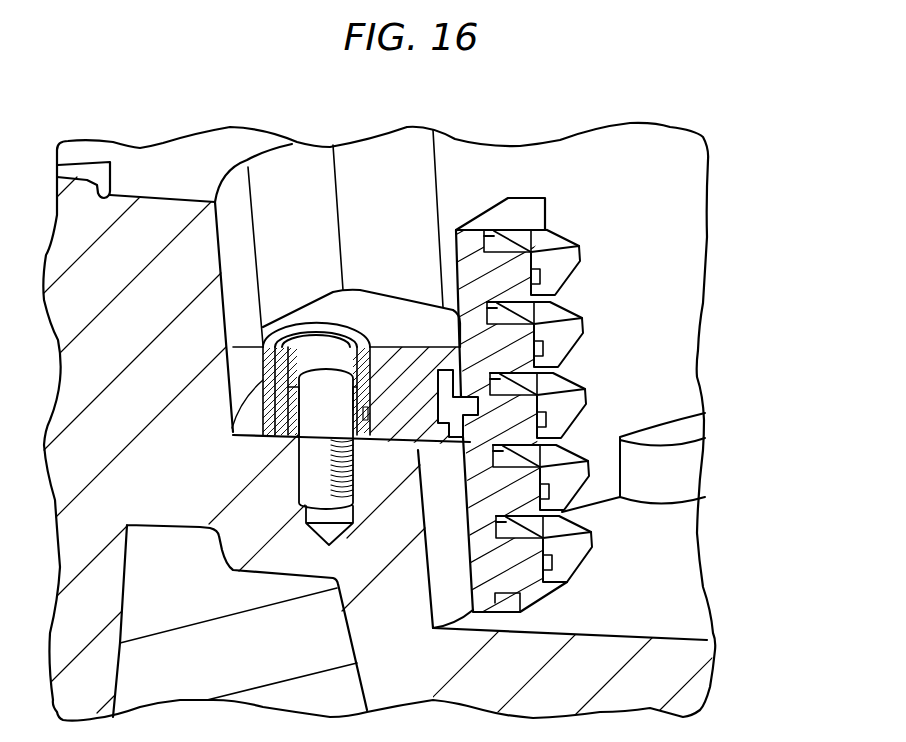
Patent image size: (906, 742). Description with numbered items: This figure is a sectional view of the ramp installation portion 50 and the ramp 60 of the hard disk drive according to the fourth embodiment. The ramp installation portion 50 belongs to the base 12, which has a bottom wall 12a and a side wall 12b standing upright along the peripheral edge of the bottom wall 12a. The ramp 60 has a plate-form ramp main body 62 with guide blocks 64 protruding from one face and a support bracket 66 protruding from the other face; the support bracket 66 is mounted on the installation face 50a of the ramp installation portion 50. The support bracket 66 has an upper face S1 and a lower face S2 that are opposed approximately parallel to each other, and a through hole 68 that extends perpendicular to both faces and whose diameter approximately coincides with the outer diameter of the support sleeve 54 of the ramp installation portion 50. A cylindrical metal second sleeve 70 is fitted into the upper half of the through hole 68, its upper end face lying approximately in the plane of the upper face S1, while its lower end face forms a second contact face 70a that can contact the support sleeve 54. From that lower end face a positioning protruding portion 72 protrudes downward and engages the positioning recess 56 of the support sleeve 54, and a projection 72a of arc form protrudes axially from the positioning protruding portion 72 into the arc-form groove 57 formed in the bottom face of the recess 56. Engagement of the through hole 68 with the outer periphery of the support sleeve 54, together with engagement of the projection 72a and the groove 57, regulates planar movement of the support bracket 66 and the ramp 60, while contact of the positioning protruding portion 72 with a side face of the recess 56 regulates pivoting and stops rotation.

The base 12 is at (163, 158).
The bottom wall 12a is at (688, 607).
The side wall 12b is at (308, 167).
The ramp installation portion 50 is at (440, 575).
The installation face 50a is at (237, 427).
The support sleeve 54 is at (298, 440).
The positioning recess 56 is at (332, 360).
The groove 57 is at (364, 415).
The ramp 60 is at (466, 184).
The ramp main body 62 is at (530, 217).
The guide blocks 64 is at (565, 333).
The support bracket 66 is at (367, 303).
The through hole 68 is at (265, 437).
The second sleeve 70 is at (286, 346).
The second contact face 70a is at (297, 405).
The positioning protruding portion 72 is at (373, 345).
The projection 72a is at (407, 447).
The upper face S1 is at (398, 313).
The lower face S2 is at (384, 441).